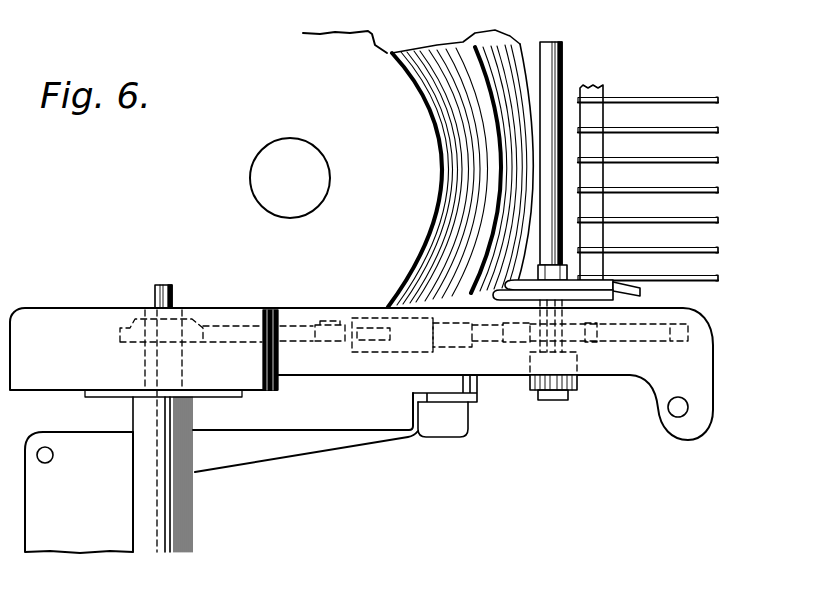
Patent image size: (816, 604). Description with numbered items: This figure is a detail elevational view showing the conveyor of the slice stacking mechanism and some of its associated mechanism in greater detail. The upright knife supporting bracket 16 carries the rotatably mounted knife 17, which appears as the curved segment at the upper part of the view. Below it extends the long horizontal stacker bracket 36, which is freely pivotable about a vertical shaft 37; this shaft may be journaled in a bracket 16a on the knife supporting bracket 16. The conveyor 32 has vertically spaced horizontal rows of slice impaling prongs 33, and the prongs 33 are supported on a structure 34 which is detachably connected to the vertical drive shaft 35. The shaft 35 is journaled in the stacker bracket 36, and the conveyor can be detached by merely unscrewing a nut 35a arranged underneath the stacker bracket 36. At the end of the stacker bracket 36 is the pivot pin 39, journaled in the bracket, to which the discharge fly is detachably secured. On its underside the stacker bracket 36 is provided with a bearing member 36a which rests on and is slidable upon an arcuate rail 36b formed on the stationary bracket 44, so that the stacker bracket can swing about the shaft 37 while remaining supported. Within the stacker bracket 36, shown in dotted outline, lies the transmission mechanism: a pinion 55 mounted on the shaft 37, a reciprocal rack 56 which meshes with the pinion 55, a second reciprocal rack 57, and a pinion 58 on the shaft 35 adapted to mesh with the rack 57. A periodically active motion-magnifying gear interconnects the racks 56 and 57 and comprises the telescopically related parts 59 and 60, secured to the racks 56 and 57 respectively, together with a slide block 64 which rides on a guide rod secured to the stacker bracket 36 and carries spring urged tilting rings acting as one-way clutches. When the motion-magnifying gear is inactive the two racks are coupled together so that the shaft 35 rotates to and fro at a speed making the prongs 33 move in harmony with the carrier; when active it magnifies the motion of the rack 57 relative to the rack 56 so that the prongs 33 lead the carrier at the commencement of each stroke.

The knife supporting bracket 16 is at (318, 124).
The bracket 16a is at (80, 522).
The knife 17 is at (500, 40).
The conveyor 32 is at (645, 100).
The slice impaling prongs 33 is at (715, 100).
The structure 34 is at (597, 150).
The vertical drive shaft 35 is at (563, 57).
The nut 35a is at (565, 400).
The stacker bracket 36 is at (83, 310).
The bearing member 36a is at (473, 378).
The arcuate rail 36b is at (448, 427).
The vertical shaft 37 is at (163, 287).
The pivot pin 39 is at (677, 413).
The stationary bracket 44 is at (292, 447).
The pinion 55 is at (120, 337).
The reciprocal rack 56 is at (288, 323).
The second reciprocal rack 57 is at (690, 317).
The pinion 58 is at (583, 337).
The telescopic part 59 is at (357, 342).
The telescopic part 60 is at (493, 342).
The slide block 64 is at (403, 275).